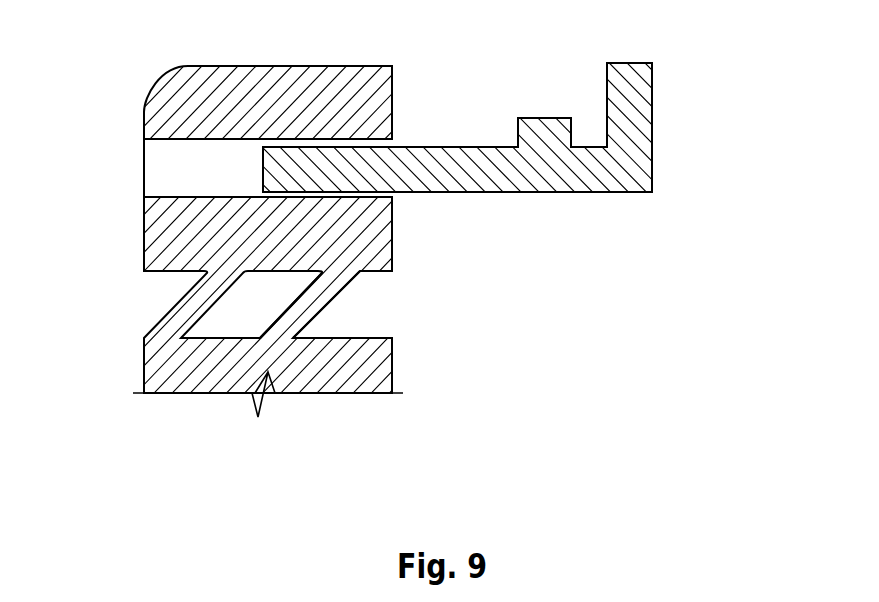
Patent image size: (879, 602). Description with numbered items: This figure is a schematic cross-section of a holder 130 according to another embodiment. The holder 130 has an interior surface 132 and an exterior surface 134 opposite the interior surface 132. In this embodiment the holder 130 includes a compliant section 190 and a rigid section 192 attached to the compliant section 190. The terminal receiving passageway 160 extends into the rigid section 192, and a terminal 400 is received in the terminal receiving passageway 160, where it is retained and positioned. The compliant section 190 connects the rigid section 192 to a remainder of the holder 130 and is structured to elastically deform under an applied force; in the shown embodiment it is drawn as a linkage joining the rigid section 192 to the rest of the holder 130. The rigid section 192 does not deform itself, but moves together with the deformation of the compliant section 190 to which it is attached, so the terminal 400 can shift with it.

The holder 130 is at (124, 254).
The interior surface 132 is at (392, 233).
The exterior surface 134 is at (145, 113).
The terminal receiving passageway 160 is at (402, 139).
The compliant section 190 is at (365, 283).
The rigid section 192 is at (392, 66).
The terminal 400 is at (672, 93).